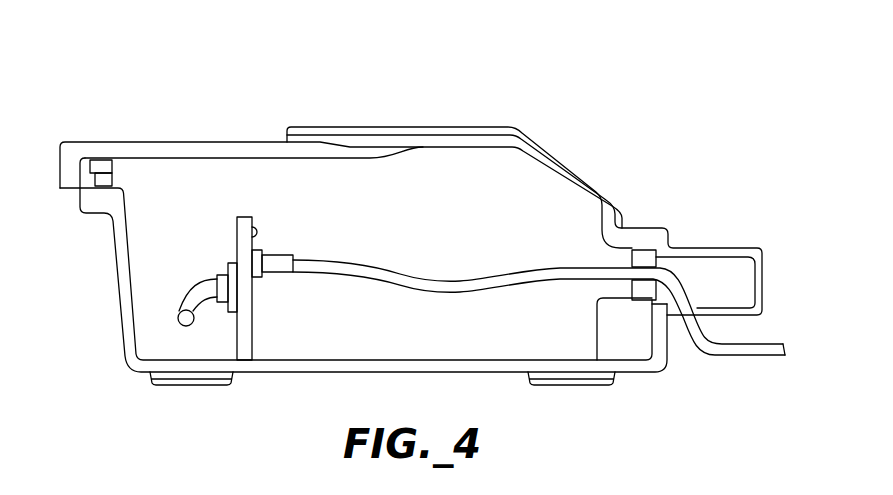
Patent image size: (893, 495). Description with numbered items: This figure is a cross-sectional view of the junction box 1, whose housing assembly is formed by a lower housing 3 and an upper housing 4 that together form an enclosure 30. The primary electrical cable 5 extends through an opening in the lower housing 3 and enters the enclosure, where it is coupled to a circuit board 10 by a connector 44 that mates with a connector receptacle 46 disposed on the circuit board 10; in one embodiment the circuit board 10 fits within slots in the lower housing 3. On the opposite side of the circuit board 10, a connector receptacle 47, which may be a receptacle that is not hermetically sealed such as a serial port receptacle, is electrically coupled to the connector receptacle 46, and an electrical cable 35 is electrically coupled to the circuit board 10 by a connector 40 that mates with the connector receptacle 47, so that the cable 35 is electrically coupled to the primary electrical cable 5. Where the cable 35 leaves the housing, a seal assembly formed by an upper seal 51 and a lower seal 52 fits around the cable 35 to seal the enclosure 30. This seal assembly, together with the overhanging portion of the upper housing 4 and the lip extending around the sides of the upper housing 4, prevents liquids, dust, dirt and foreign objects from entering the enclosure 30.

The junction box 1 is at (144, 85).
The lower housing 3 is at (112, 235).
The upper housing 4 is at (192, 142).
The primary electrical cable 5 is at (183, 287).
The circuit board 10 is at (248, 315).
The enclosure 30 is at (481, 220).
The electrical cable 35 is at (753, 357).
The connector 40 is at (272, 258).
The connector 44 is at (222, 272).
The connector receptacle 46 is at (233, 265).
The connector receptacle 47 is at (256, 278).
The upper seal 51 is at (101, 166).
The lower seal 52 is at (112, 178).